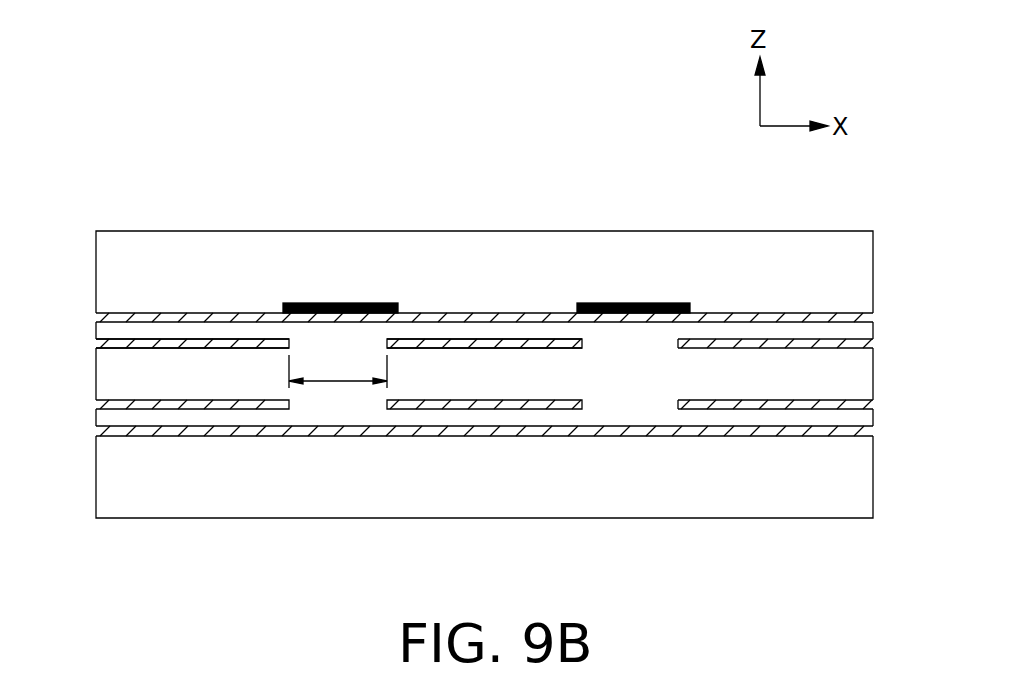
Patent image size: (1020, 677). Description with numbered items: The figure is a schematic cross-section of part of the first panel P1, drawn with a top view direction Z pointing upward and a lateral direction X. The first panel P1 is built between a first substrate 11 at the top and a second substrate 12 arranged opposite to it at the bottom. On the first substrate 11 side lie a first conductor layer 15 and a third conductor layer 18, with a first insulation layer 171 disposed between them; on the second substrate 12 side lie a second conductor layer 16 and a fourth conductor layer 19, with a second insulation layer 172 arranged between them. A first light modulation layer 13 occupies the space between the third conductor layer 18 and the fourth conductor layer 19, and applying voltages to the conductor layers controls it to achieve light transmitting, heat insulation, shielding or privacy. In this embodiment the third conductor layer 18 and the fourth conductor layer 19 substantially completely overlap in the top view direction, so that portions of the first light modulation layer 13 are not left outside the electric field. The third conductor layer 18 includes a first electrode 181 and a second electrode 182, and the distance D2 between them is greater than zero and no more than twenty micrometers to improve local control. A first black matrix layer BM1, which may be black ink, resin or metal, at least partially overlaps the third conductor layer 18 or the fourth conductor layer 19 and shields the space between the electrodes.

The first substrate 11 is at (862, 265).
The second substrate 12 is at (866, 486).
The first light modulation layer 13 is at (866, 370).
The first conductor layer 15 is at (866, 319).
The second conductor layer 16 is at (867, 437).
The first insulation layer 171 is at (867, 333).
The second insulation layer 172 is at (867, 410).
The third conductor layer 18 is at (97, 345).
The first electrode 181 is at (147, 342).
The second electrode 182 is at (487, 340).
The fourth conductor layer 19 is at (97, 405).
The first black matrix layer BM1 is at (348, 303).
The distance between the first electrode and the second electrode D2 is at (338, 369).
The first panel P1 is at (194, 141).